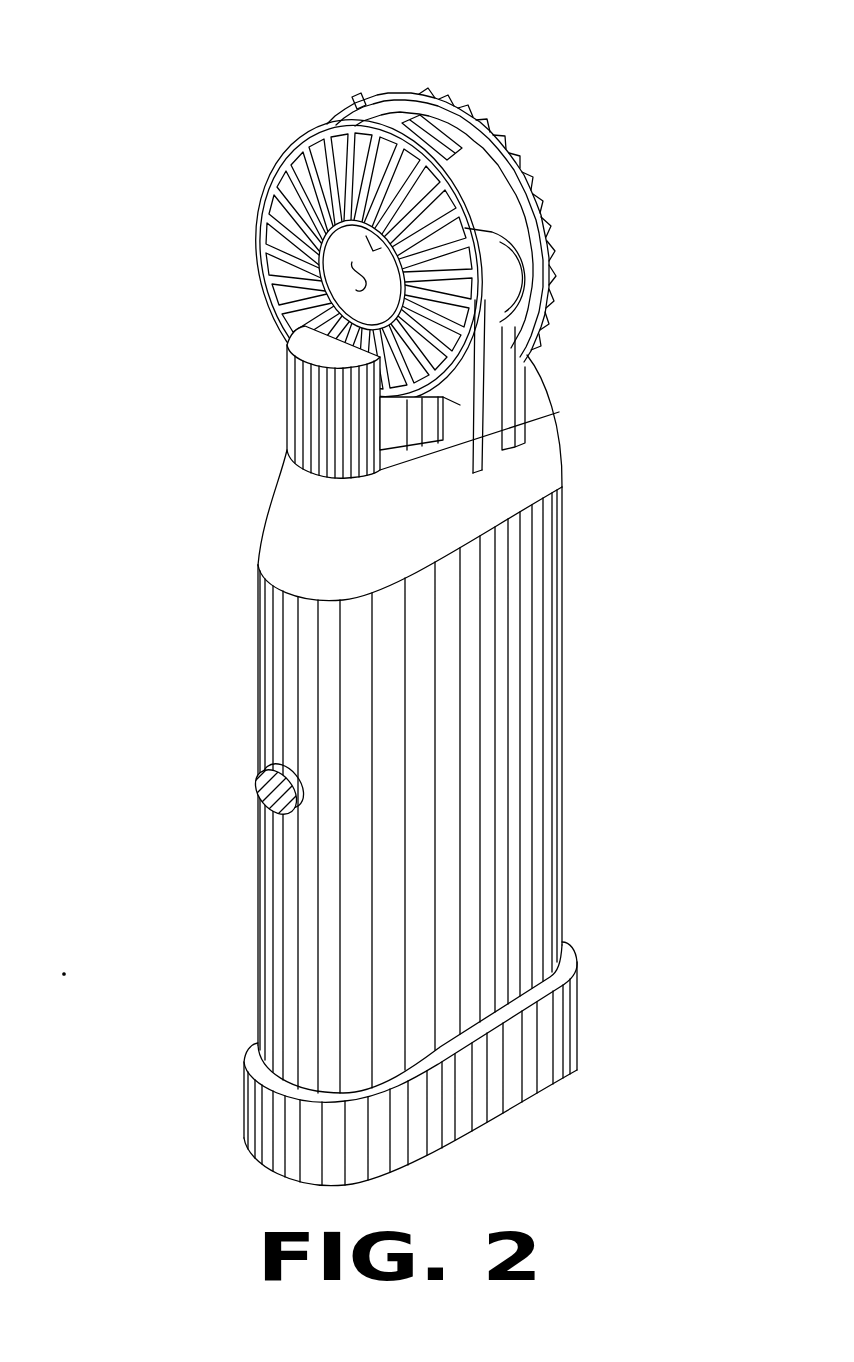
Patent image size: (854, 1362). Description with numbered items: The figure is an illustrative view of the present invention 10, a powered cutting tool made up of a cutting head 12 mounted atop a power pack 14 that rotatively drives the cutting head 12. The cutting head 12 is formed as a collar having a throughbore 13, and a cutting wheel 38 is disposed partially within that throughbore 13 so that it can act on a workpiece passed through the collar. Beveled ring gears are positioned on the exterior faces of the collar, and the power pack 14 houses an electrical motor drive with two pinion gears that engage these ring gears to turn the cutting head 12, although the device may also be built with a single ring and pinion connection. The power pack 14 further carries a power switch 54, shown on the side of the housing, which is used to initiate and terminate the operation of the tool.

The present invention 10 is at (381, 603).
The cutting head 12 is at (442, 255).
The throughbore 13 is at (333, 288).
The power pack 14 is at (404, 756).
The cutting wheel 38 is at (437, 135).
The power switch 54 is at (262, 776).